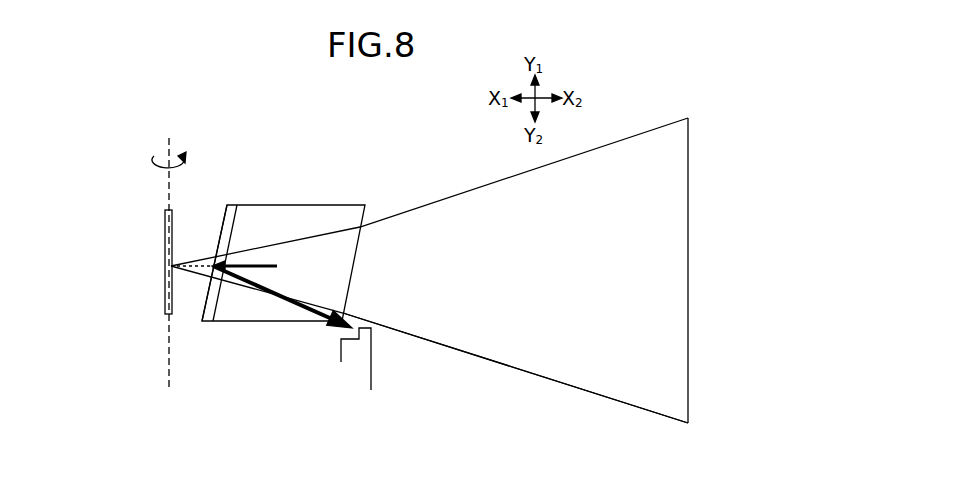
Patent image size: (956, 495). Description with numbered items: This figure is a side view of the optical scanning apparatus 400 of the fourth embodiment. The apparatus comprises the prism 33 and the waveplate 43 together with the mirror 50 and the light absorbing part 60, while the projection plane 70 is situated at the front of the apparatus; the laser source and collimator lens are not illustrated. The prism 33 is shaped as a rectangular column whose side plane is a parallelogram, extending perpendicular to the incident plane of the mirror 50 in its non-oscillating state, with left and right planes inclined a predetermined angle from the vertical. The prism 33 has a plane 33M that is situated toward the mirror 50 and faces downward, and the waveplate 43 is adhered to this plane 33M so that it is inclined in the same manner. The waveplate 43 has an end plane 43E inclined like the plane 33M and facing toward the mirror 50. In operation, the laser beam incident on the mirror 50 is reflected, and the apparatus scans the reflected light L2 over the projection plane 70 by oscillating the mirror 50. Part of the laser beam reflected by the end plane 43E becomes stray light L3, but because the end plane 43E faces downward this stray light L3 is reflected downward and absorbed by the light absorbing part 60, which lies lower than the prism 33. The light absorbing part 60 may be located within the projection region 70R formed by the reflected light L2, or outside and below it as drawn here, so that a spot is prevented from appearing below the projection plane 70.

The optical scanning apparatus 400 is at (118, 117).
The mirror 50 is at (165, 228).
The prism 33 is at (332, 204).
The plane 33M is at (243, 232).
The waveplate 43 is at (237, 207).
The end plane 43E is at (221, 227).
The stray light L3 is at (310, 312).
The light absorbing part 60 is at (360, 368).
The reflected light L2 is at (444, 347).
The projection region 70R is at (520, 345).
The projection plane 70 is at (688, 282).